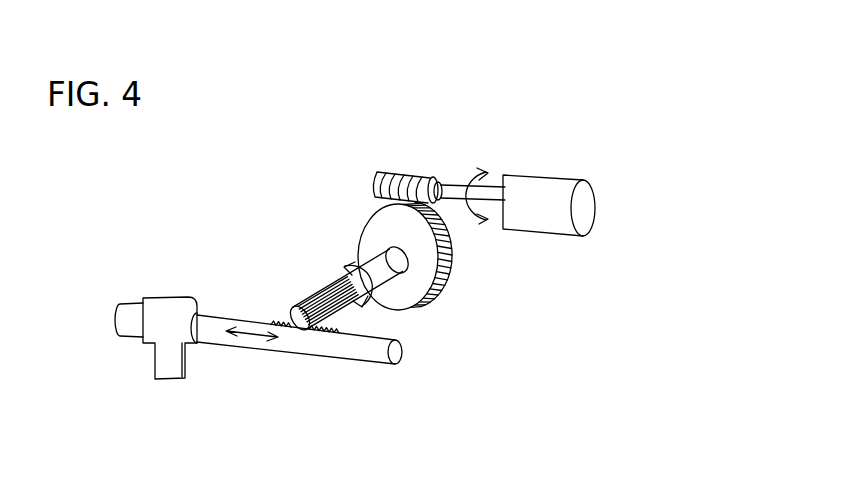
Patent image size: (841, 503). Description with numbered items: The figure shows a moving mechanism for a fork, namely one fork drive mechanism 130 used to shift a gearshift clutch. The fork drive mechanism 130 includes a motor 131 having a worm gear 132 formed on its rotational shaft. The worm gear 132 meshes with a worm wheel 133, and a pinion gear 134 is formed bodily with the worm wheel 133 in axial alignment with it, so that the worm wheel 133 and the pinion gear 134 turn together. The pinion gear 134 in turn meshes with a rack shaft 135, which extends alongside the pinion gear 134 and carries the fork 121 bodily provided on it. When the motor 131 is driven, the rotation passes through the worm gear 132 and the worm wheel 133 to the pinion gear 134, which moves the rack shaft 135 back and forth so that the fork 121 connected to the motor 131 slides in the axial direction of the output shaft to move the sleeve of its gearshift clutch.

The fork drive mechanism 130 is at (616, 174).
The motor 131 is at (560, 182).
The worm gear 132 is at (402, 172).
The worm wheel 133 is at (449, 270).
The pinion gear 134 is at (320, 290).
The rack shaft 135 is at (345, 362).
The fork 121 is at (189, 371).